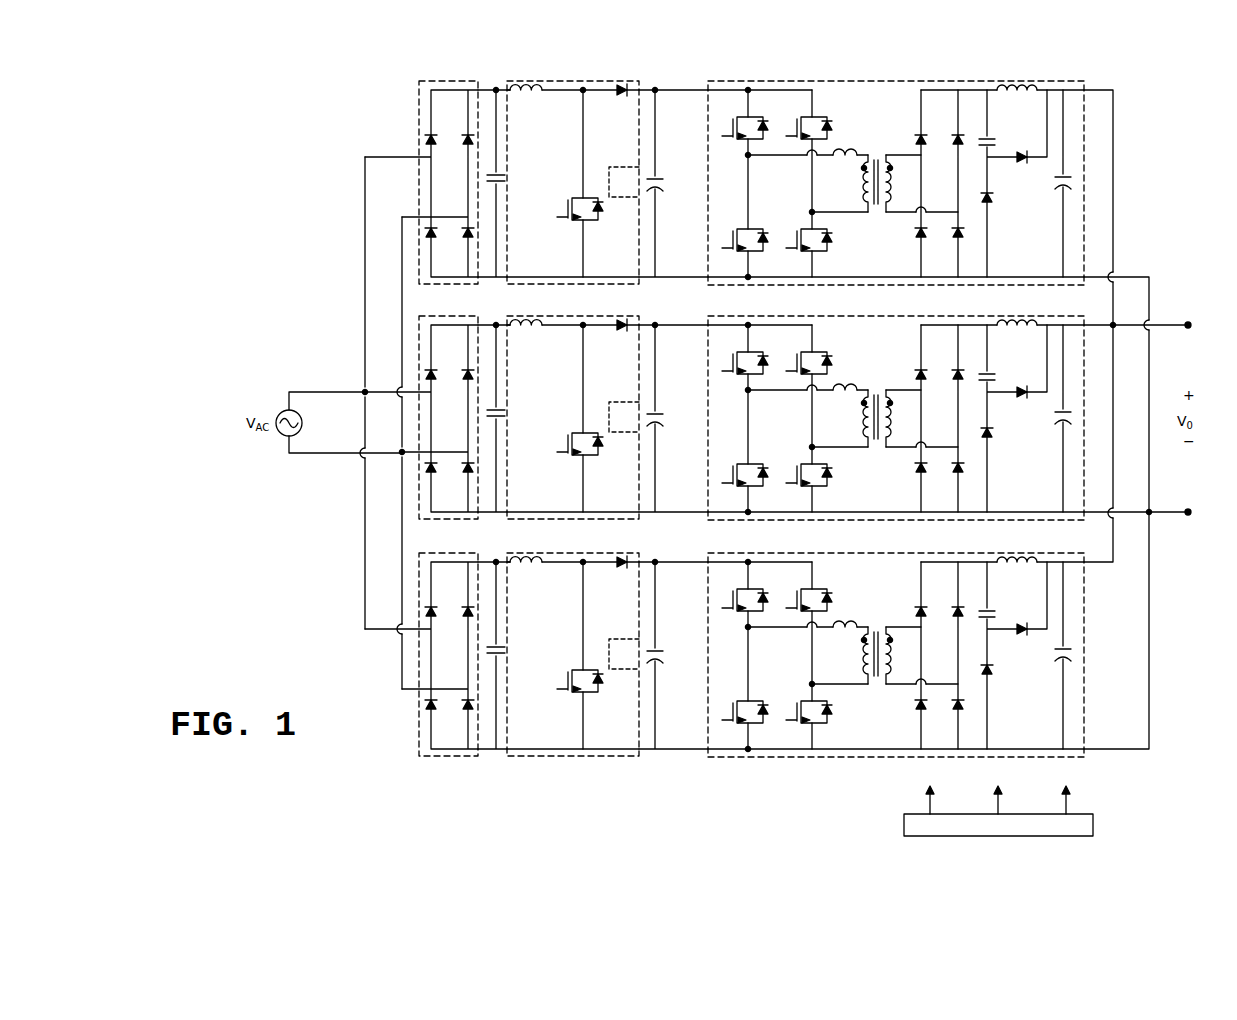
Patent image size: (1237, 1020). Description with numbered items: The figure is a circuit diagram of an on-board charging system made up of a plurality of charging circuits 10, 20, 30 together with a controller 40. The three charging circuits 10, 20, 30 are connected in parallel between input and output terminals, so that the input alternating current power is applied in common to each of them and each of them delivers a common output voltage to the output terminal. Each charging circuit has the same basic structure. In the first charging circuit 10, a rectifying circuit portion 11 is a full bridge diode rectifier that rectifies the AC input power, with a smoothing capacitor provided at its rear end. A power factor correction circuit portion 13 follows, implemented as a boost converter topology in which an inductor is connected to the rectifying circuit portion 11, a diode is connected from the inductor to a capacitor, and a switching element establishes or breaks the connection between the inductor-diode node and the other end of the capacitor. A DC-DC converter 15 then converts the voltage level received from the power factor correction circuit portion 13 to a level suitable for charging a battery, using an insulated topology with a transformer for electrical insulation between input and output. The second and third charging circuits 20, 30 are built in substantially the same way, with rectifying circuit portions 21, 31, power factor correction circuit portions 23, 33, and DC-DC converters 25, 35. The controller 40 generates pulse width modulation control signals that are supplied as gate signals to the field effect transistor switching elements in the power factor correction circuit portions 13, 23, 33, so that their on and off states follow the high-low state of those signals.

The charging circuit 10 is at (787, 159).
The rectifying circuit portion 11 is at (419, 108).
The power factor correction circuit portion 13 is at (571, 80).
The DC-DC converter 15 is at (874, 80).
The charging circuit 20 is at (763, 401).
The rectifying circuit portion 21 is at (391, 417).
The power factor correction circuit portion 23 is at (594, 400).
The DC-DC converter 25 is at (963, 418).
The charging circuit 30 is at (781, 686).
The rectifying circuit portion 31 is at (411, 654).
The power factor correction circuit portion 33 is at (573, 686).
The DC-DC converter 35 is at (962, 655).
The controller 40 is at (1093, 826).